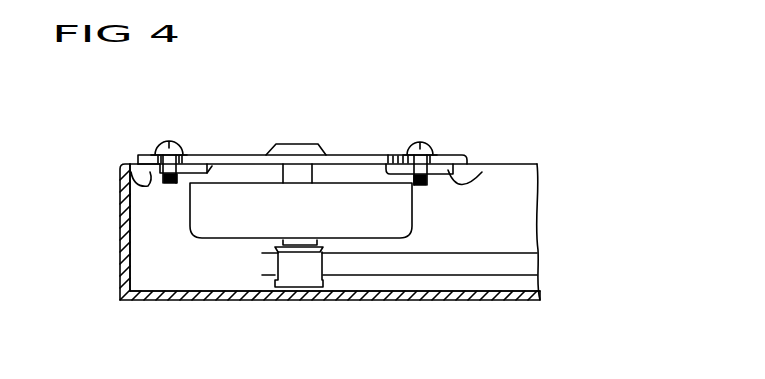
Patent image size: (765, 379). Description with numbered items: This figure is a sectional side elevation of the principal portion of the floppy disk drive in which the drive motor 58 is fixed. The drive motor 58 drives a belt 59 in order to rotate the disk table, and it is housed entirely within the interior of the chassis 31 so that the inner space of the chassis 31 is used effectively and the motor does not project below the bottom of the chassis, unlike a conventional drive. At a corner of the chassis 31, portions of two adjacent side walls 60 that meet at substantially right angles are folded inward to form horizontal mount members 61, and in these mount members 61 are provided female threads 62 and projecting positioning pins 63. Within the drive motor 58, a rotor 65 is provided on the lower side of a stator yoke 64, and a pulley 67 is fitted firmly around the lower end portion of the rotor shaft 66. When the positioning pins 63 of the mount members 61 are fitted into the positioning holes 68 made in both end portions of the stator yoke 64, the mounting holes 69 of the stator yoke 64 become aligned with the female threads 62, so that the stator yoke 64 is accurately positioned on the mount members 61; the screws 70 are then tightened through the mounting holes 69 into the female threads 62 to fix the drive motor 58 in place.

The chassis 31 is at (390, 302).
The drive motor 58 is at (324, 132).
The belt 59 is at (343, 262).
The side wall 60 is at (121, 210).
The mount member 61 is at (124, 178).
The female thread 62 is at (236, 155).
The positioning pin 63 is at (191, 163).
The stator yoke 64 is at (248, 158).
The rotor 65 is at (203, 227).
The rotor shaft 66 is at (275, 248).
The pulley 67 is at (295, 283).
The positioning hole 68 is at (209, 159).
The mounting hole 69 is at (152, 149).
The screw 70 is at (172, 142).